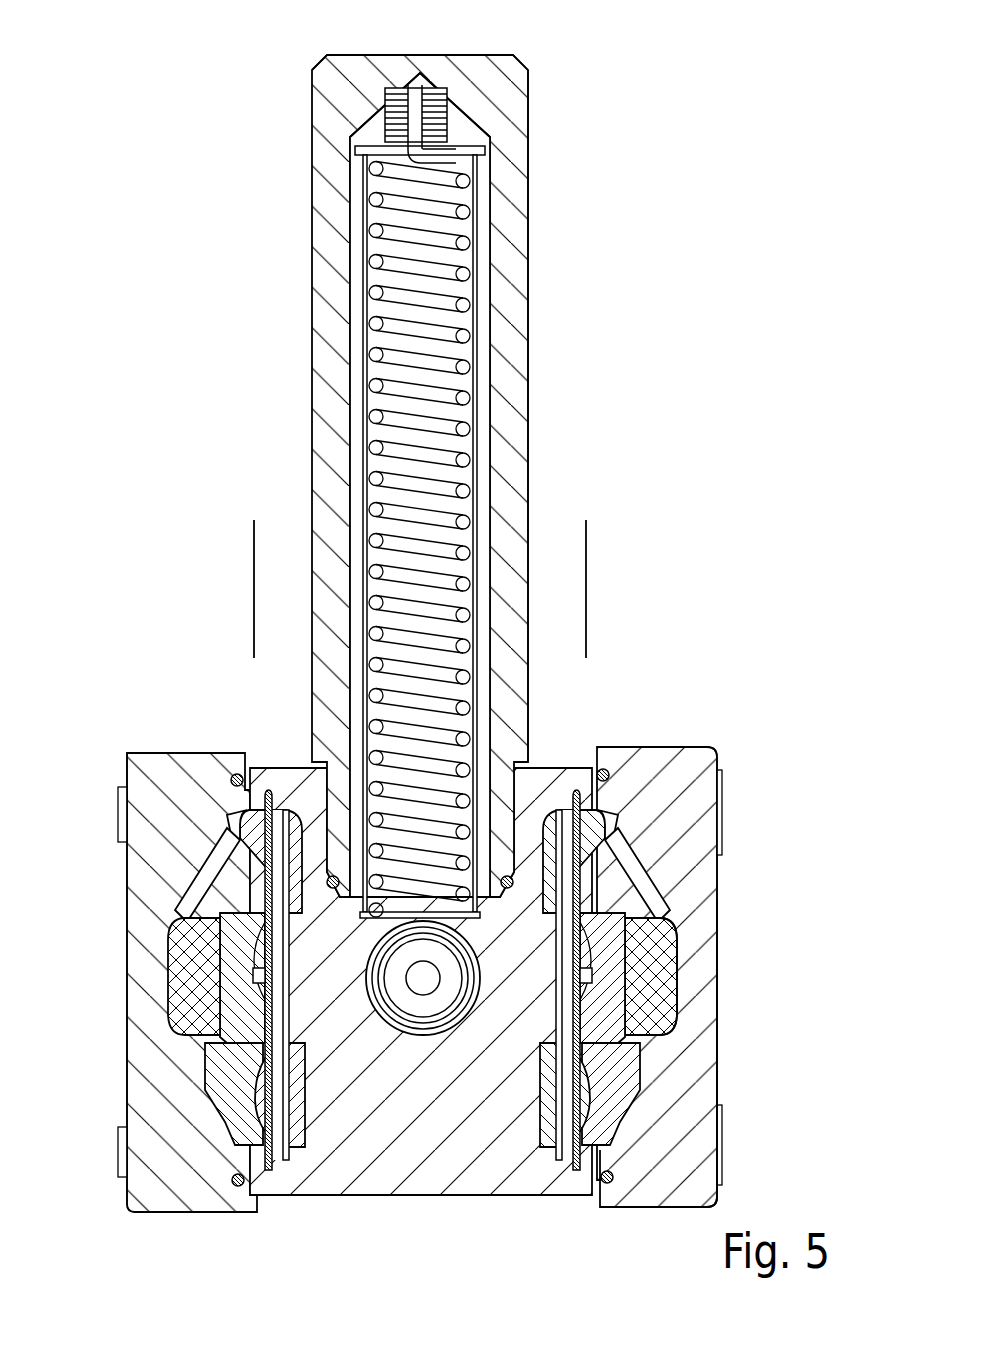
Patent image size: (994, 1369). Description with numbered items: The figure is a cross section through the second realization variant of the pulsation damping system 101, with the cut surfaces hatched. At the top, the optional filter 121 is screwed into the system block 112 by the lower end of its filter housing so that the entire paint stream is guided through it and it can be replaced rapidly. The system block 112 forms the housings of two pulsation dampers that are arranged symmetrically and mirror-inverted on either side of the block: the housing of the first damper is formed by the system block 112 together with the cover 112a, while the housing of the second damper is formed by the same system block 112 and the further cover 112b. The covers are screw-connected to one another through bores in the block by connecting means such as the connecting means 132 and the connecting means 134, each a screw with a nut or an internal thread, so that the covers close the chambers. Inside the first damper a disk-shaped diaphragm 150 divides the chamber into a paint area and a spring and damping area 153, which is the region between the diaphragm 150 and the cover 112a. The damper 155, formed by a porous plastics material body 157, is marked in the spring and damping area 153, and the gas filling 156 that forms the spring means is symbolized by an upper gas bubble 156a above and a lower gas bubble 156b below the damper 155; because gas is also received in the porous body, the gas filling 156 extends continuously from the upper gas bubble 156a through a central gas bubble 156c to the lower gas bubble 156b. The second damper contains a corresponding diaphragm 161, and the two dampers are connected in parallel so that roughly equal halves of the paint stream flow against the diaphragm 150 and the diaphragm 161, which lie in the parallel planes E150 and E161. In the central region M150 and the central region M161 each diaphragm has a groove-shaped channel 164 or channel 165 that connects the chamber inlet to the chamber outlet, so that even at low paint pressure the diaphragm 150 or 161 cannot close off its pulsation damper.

The pulsation damping system 101 is at (692, 173).
The filter 121 is at (550, 133).
The system block 112 is at (420, 1153).
The cover 112a is at (655, 770).
The further cover 112b is at (155, 1068).
The connecting means 132 is at (720, 780).
The connecting means 134 is at (720, 1168).
The diaphragm 150 is at (597, 945).
The central region of diaphragm M150 is at (600, 1003).
The spring and damping area 153 is at (620, 887).
The damper 155 is at (643, 935).
The porous plastics material body 157 is at (643, 935).
The gas filling 156 is at (612, 857).
The upper gas bubble 156a is at (630, 825).
The lower gas bubble 156b is at (610, 1113).
The central gas bubble 156c is at (647, 1013).
The diaphragm 161 is at (232, 970).
The central region of diaphragm M161 is at (227, 948).
The channel 164 is at (552, 978).
The channel 165 is at (290, 973).
The plane E161 is at (254, 562).
The plane E150 is at (586, 562).